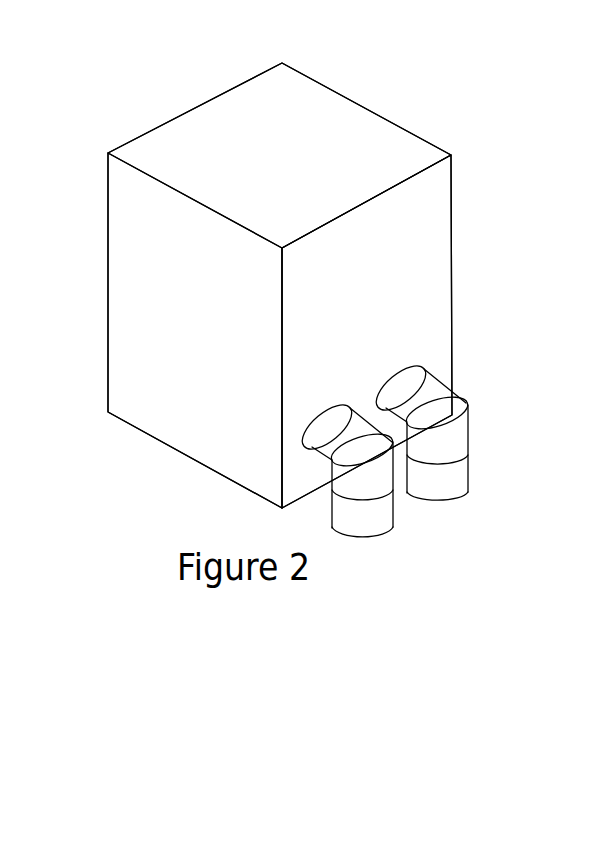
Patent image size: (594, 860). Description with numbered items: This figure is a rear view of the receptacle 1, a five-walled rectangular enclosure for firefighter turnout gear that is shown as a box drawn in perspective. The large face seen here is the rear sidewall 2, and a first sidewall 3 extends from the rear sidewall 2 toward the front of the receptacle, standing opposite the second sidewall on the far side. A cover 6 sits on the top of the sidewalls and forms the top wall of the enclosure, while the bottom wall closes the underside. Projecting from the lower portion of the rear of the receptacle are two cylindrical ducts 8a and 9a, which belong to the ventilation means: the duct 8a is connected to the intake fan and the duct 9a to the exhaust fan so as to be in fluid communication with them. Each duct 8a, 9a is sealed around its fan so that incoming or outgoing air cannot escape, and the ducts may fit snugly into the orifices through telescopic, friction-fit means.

The receptacle 1 is at (400, 107).
The rear sidewall 2 is at (420, 271).
The first sidewall 3 is at (109, 412).
The cover 6 is at (282, 88).
The duct 8a is at (468, 407).
The duct 9a is at (308, 420).